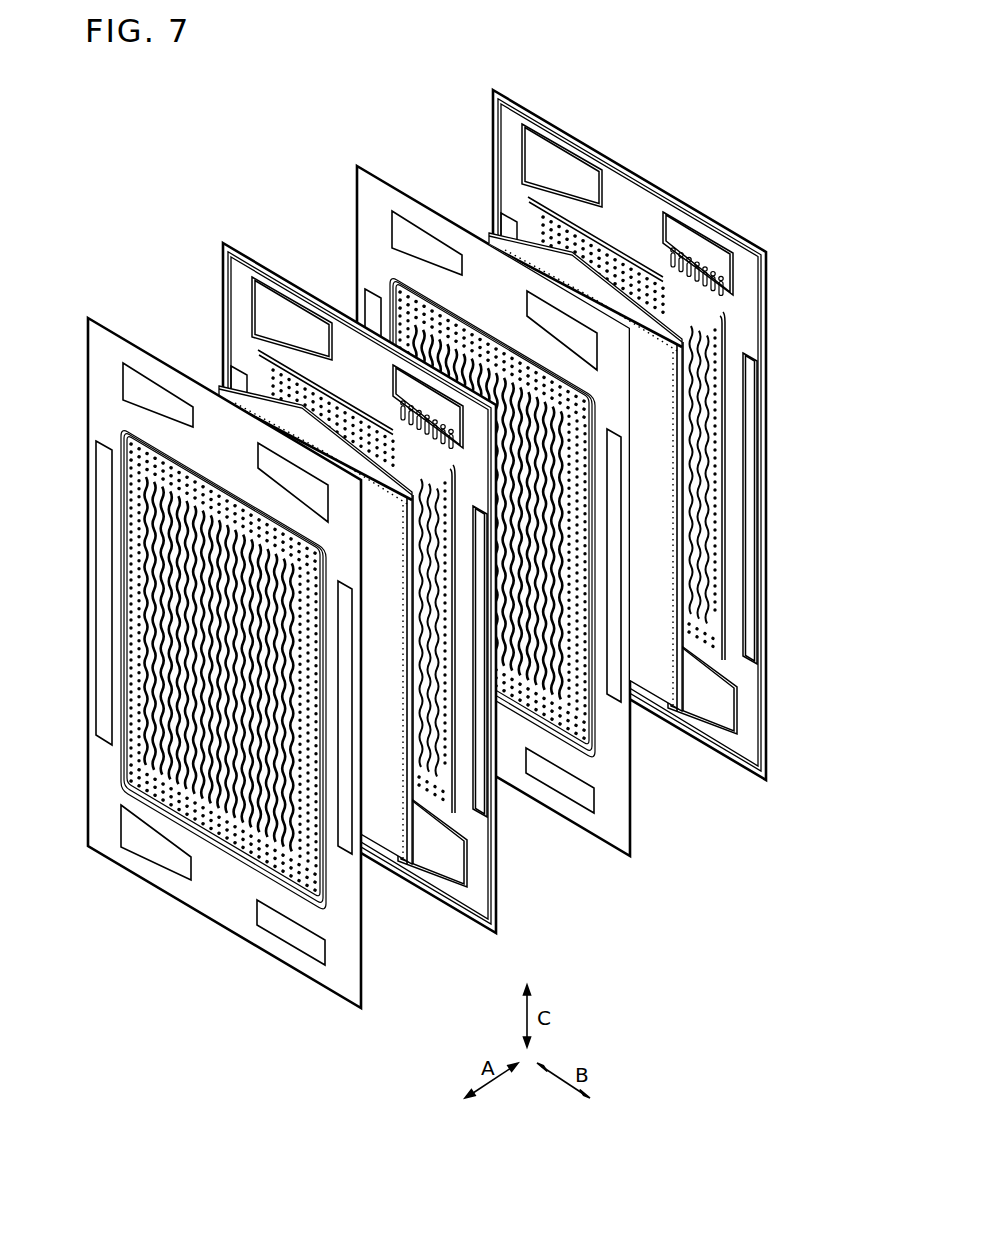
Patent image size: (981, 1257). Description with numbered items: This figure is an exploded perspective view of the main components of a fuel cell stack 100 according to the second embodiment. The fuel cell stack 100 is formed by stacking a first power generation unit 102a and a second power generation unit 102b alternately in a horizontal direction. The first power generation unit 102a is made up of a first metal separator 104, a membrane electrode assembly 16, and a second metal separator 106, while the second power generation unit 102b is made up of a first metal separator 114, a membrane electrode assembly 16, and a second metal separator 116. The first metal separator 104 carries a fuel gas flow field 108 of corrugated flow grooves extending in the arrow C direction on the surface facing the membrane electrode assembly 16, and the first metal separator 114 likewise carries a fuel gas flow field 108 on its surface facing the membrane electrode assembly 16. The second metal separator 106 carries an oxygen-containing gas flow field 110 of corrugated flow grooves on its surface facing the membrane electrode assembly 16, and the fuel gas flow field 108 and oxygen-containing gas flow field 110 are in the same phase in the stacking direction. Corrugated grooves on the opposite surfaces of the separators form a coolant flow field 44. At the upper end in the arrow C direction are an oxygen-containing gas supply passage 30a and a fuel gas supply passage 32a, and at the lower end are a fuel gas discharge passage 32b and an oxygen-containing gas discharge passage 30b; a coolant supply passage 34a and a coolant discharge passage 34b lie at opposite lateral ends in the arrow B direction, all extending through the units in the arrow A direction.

The fuel cell stack 100 is at (356, 80).
The first power generation unit 102a is at (167, 178).
The second power generation unit 102b is at (829, 808).
The first metal separator 104 is at (222, 243).
The second metal separator 106 is at (216, 639).
The fuel gas flow field 108 is at (698, 444).
The oxygen-containing gas flow field 110 is at (560, 530).
The first metal separator 114 is at (765, 773).
The second metal separator 116 is at (521, 538).
The membrane electrode assembly 16 is at (651, 688).
The coolant flow field 44 is at (560, 490).
The oxygen-containing gas supply passage 30a is at (135, 388).
The oxygen-containing gas discharge passage 30b is at (273, 916).
The fuel gas supply passage 32a is at (318, 490).
The fuel gas discharge passage 32b is at (157, 858).
The coolant supply passage 34a is at (100, 632).
The coolant discharge passage 34b is at (345, 738).